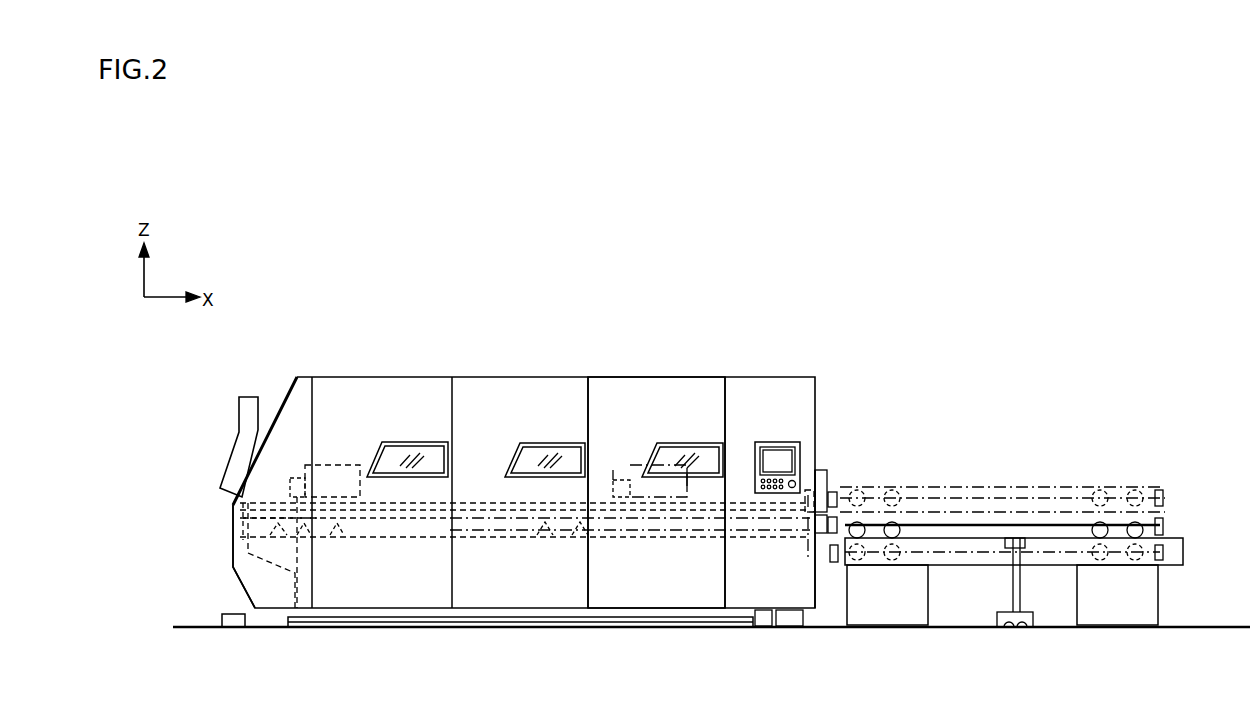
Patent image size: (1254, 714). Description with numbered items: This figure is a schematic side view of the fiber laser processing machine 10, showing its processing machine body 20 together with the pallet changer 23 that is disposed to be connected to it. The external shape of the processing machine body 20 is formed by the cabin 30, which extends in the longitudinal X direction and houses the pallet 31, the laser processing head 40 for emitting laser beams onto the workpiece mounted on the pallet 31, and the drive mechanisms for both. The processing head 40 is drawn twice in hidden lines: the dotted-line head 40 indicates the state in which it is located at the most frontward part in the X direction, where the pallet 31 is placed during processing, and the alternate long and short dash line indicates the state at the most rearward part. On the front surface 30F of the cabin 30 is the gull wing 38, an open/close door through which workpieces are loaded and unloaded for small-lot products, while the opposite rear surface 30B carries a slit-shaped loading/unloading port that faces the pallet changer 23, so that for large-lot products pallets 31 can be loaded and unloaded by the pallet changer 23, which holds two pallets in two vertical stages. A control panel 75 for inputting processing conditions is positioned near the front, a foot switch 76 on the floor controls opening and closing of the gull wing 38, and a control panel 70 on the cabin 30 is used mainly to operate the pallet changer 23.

The fiber laser processing machine 10 is at (860, 341).
The processing machine body 20 is at (614, 379).
The pallet changer 23 is at (1007, 479).
The cabin 30 is at (480, 379).
The front surface 30F is at (232, 551).
The rear surface 30B is at (818, 578).
The pallet 31 is at (1168, 552).
The gull wing 38 is at (278, 394).
The laser processing head 40 is at (300, 478).
The control panel 70 is at (780, 455).
The control panel 75 is at (250, 400).
The foot switch 76 is at (234, 630).